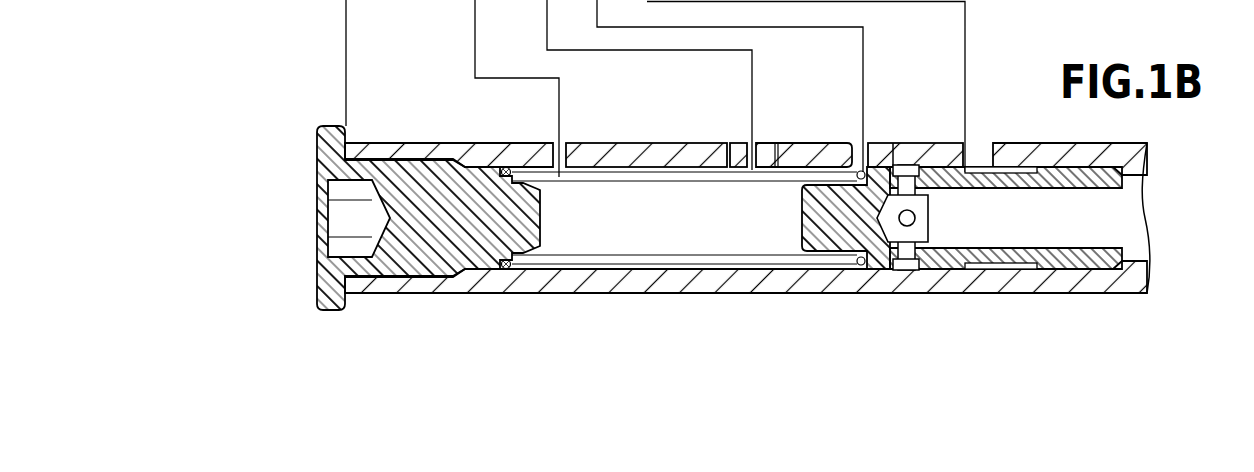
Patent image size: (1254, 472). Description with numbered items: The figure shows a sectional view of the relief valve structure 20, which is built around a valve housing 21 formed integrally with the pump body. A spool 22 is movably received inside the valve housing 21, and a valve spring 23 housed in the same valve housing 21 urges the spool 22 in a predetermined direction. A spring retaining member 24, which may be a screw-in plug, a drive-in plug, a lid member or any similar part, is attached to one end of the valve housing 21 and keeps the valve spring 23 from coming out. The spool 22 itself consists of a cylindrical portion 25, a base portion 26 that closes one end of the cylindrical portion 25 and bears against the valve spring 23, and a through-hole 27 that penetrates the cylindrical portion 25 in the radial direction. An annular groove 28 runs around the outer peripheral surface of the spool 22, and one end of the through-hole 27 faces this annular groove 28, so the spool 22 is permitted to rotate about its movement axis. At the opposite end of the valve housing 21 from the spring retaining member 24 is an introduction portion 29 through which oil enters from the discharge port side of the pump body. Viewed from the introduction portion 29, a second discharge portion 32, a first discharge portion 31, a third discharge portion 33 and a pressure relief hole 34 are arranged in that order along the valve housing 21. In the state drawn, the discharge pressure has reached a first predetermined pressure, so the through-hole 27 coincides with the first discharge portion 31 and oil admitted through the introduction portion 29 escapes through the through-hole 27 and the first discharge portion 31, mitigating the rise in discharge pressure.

The relief valve structure 20 is at (305, 98).
The valve housing 21 is at (643, 150).
The spool 22 is at (997, 265).
The valve spring 23 is at (702, 265).
The spring retaining member 24 is at (415, 247).
The cylindrical portion 25 is at (1058, 180).
The base portion 26 is at (828, 219).
The through-hole 27 is at (920, 152).
The annular groove 28 is at (893, 152).
The introduction portion 29 is at (1138, 178).
The first discharge portion 31 is at (857, 152).
The second discharge portion 32 is at (992, 155).
The third discharge portion 33 is at (740, 152).
The pressure relief hole 34 is at (554, 143).